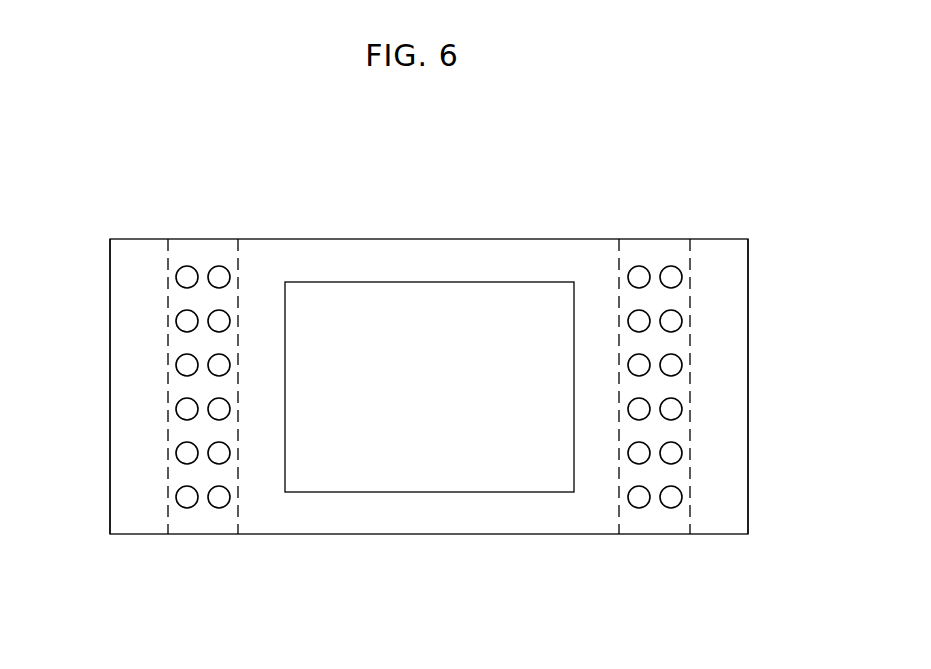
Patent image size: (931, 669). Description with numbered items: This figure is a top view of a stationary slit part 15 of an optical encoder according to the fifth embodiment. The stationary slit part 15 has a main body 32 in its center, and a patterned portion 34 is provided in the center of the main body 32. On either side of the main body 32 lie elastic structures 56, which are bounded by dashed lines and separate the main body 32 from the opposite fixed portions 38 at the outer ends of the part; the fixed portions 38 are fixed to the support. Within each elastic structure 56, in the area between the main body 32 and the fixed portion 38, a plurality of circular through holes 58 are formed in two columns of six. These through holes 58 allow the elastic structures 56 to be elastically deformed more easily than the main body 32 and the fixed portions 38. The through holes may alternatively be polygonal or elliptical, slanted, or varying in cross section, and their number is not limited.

The stationary slit part 15 is at (255, 212).
The main body 32 is at (556, 239).
The patterned portion 34 is at (472, 470).
The fixed portions 38 is at (118, 328).
The elastic structures 56 is at (204, 247).
The circular through holes 58 is at (177, 318).